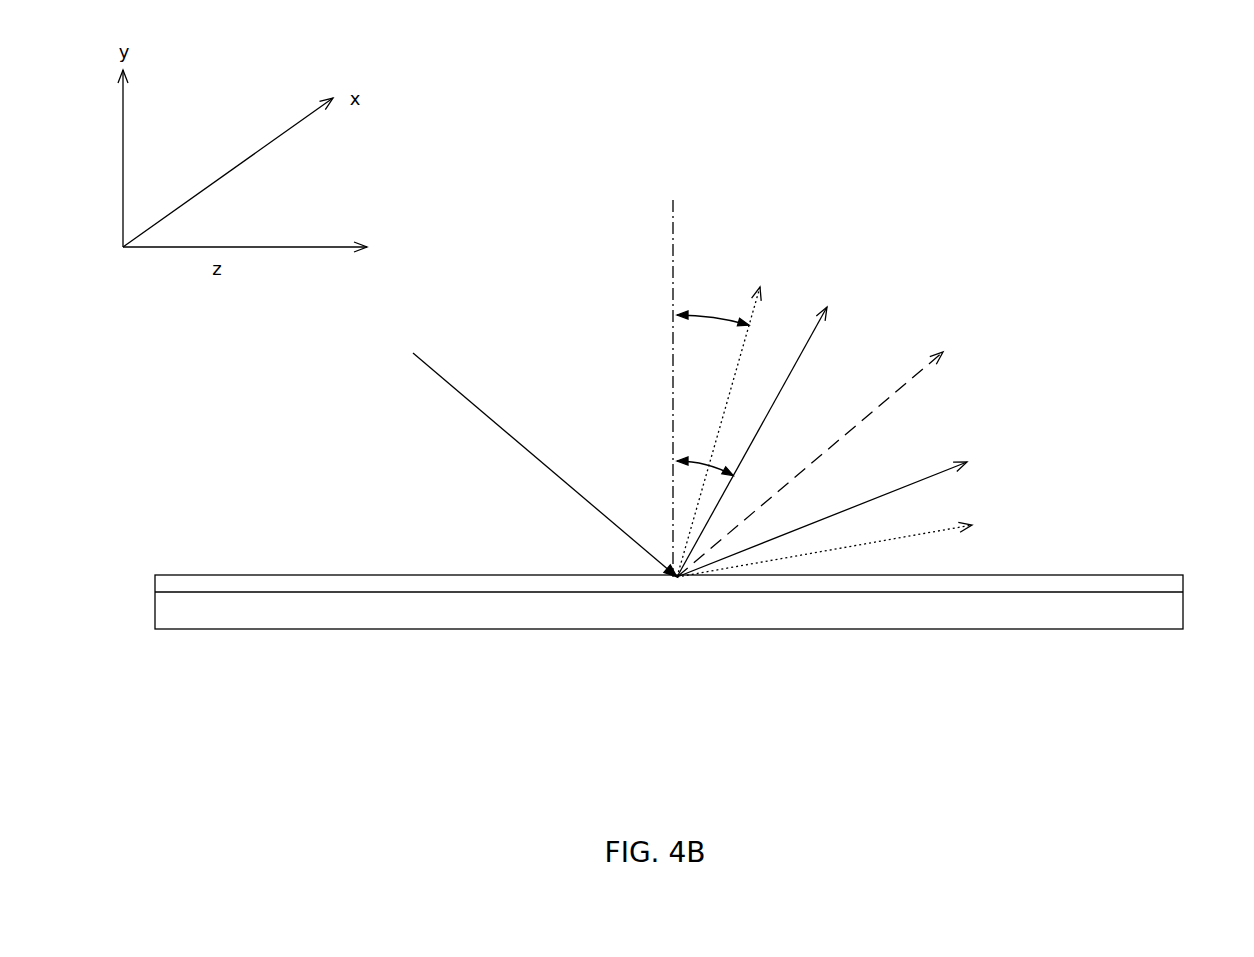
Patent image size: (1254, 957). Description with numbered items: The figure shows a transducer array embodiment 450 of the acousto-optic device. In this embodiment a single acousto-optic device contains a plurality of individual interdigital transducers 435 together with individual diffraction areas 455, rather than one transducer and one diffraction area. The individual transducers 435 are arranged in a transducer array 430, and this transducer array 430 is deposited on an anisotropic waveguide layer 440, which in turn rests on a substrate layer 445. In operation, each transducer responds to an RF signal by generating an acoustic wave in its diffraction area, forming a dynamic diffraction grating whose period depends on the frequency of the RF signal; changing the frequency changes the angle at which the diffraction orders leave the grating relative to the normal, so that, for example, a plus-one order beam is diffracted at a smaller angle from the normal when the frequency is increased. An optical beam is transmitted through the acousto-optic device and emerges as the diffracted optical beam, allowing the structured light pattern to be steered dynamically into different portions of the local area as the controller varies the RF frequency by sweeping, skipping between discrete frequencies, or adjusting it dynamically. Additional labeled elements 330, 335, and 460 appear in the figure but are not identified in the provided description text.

The incident beam 330 is at (423, 367).
The acousto-optic device 335 is at (227, 605).
The transducer array 430 is at (870, 449).
The individual interdigital transducers 435 is at (913, 483).
The anisotropic waveguide layer 440 is at (807, 343).
The substrate layer 445 is at (938, 527).
The transducer array embodiment 450 is at (743, 330).
The individual diffraction areas 455 is at (697, 457).
The angle between normal and 2nd-frequency +1 order beam 460 is at (703, 308).